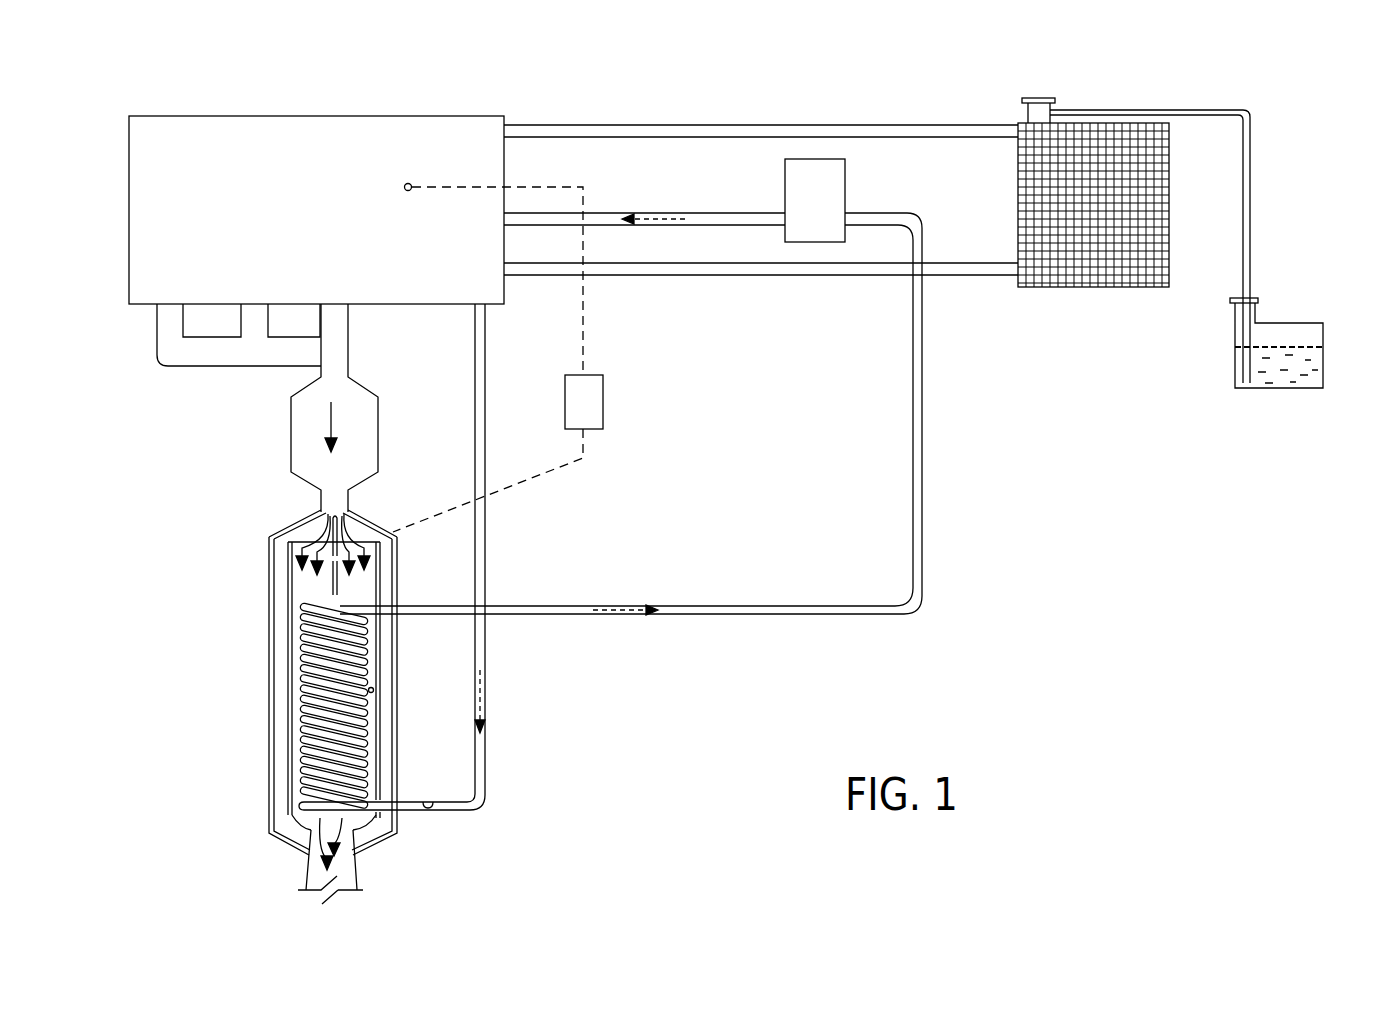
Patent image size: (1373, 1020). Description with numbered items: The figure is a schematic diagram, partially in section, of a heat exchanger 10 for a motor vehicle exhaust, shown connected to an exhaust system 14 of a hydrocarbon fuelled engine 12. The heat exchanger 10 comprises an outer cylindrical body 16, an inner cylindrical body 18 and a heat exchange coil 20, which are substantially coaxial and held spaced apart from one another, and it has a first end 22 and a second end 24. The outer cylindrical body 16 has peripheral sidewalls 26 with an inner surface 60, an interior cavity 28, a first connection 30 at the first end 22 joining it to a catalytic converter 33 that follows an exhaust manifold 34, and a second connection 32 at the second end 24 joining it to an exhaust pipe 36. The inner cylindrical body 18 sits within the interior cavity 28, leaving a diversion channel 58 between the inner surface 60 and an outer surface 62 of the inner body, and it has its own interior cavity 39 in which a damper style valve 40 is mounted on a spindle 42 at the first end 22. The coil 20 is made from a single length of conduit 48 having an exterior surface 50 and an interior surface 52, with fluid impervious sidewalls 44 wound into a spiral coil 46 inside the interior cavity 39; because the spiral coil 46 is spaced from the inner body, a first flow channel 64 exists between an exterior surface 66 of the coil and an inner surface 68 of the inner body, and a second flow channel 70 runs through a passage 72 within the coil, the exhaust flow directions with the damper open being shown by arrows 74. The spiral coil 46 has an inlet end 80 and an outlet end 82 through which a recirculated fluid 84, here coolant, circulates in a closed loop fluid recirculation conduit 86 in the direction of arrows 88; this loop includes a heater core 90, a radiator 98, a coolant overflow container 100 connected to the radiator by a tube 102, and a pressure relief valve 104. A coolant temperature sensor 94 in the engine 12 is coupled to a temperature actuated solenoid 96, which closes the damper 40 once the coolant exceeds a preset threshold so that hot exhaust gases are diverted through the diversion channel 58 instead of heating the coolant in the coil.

The heat exchanger 10 is at (190, 550).
The engine 12 is at (240, 114).
The exhaust system 14 is at (228, 419).
The outer cylindrical body 16 is at (268, 705).
The inner cylindrical body 18 is at (290, 617).
The heat exchange coil 20 is at (350, 675).
The first end 22 is at (297, 520).
The second end 24 is at (305, 868).
The peripheral sidewalls 26 is at (267, 760).
The interior cavity 28 is at (278, 727).
The first connection 30 is at (273, 543).
The second connection 32 is at (287, 837).
The catalytic converter 33 is at (297, 432).
The exhaust manifold 34 is at (172, 348).
The exhaust pipe 36 is at (310, 868).
The interior cavity 39 is at (305, 590).
The damper style valve 40 is at (337, 590).
The spindle 42 is at (347, 520).
The fluid impervious sidewalls 44 is at (300, 647).
The spiral coil 46 is at (340, 715).
The conduit 48 is at (462, 811).
The exterior surface 50 is at (412, 800).
The interior surface 52 is at (433, 800).
The diversion channel 58 is at (280, 675).
The inner surface 60 is at (275, 812).
The outer surface 62 is at (318, 775).
The first flow channel 64 is at (370, 715).
The exterior surface 66 is at (363, 647).
The inner surface 68 is at (374, 690).
The second flow channel 70 is at (370, 842).
The passage 72 is at (338, 604).
The arrows 74 is at (333, 423).
The inlet end 80 is at (390, 822).
The outlet end 82 is at (377, 614).
The recirculated fluid 84 is at (1275, 377).
The closed loop fluid recirculation conduit 86 is at (925, 385).
The arrows 88 is at (615, 614).
The heater core 90 is at (845, 190).
The coolant temperature sensor 94 is at (404, 186).
The temperature actuated solenoid 96 is at (603, 407).
The radiator 98 is at (1103, 252).
The coolant overflow container 100 is at (1293, 332).
The tube 102 is at (1250, 182).
The pressure relief valve 104 is at (1027, 113).